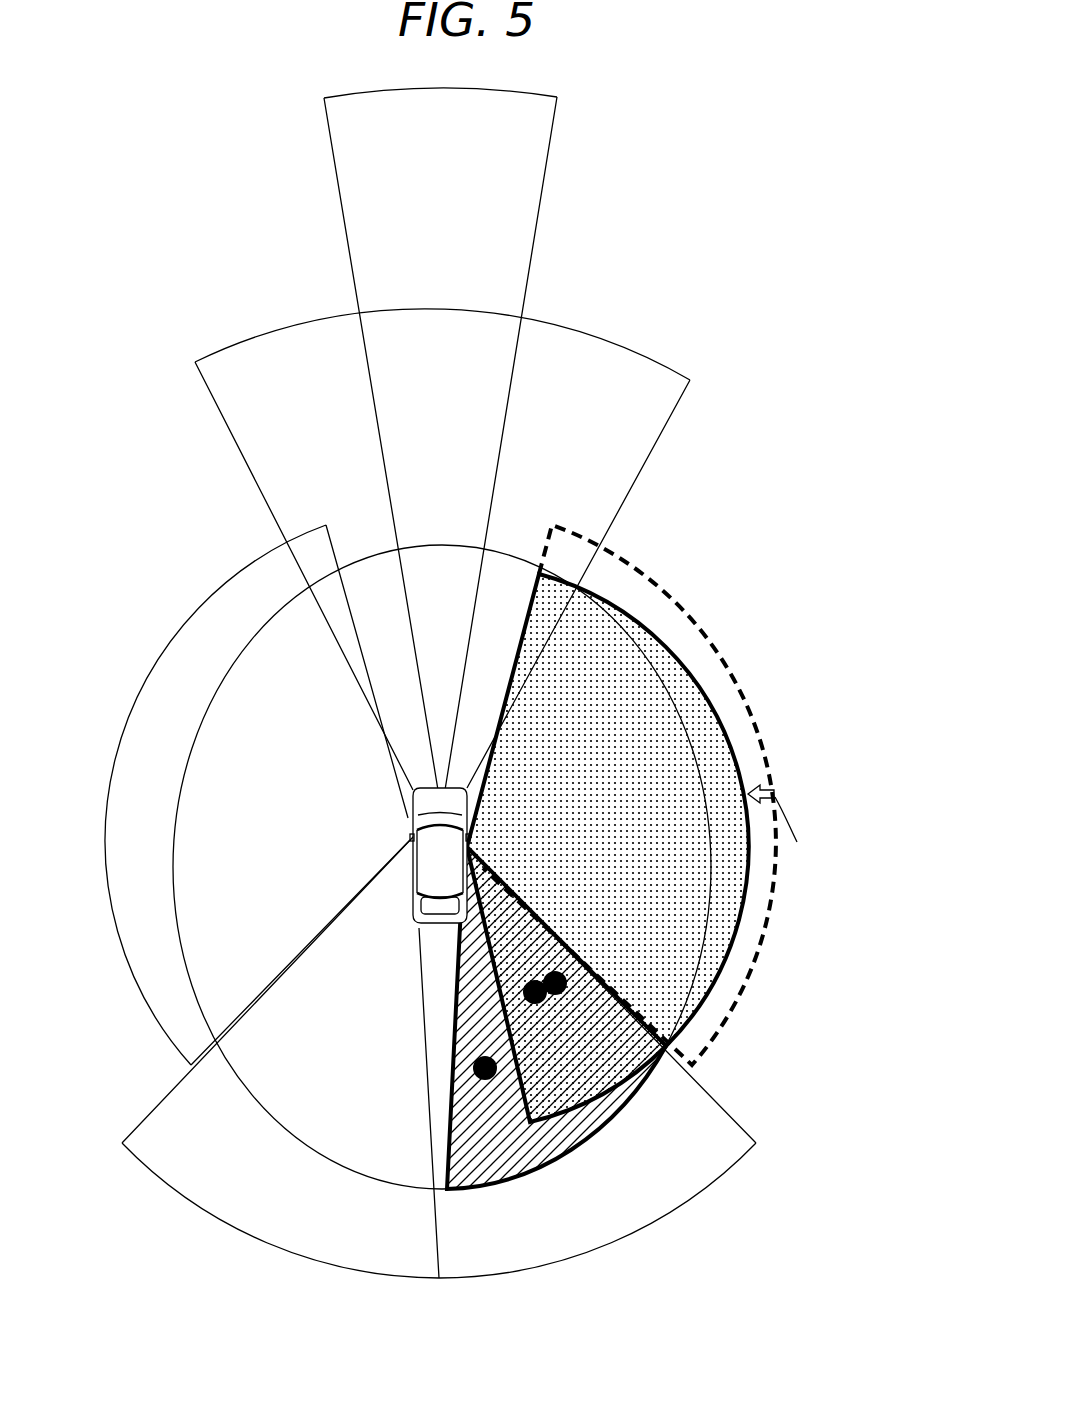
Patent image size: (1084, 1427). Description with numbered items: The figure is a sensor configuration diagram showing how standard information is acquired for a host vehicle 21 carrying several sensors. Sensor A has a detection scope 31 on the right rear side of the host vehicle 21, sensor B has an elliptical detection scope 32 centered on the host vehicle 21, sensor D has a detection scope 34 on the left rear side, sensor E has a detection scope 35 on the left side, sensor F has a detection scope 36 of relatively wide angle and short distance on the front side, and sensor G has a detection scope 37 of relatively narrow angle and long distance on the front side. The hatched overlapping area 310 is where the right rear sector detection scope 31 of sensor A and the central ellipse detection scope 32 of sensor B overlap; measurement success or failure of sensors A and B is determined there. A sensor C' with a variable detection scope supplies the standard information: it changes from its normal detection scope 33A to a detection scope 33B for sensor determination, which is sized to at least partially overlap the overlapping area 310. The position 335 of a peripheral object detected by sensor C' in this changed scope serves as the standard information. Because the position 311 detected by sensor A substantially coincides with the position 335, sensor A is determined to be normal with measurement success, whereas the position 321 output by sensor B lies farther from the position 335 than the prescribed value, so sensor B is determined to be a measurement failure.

The host vehicle 21 is at (428, 880).
The detection scope of sensor A 31 is at (726, 1176).
The detection scope of sensor B 32 is at (688, 742).
The normal detection scope of sensor C' 33A is at (705, 612).
The detection scope for sensor determination 33B is at (626, 590).
The detection scope of sensor D 34 is at (150, 1175).
The detection scope of sensor E 35 is at (176, 619).
The detection scope of sensor F 36 is at (677, 398).
The detection scope of sensor G 37 is at (553, 148).
The overlapping area 310 is at (485, 1080).
The position detected by sensor A 311 is at (560, 988).
The position output by sensor B 321 is at (543, 1158).
The position of peripheral object detected by sensor C' 335 is at (535, 1003).